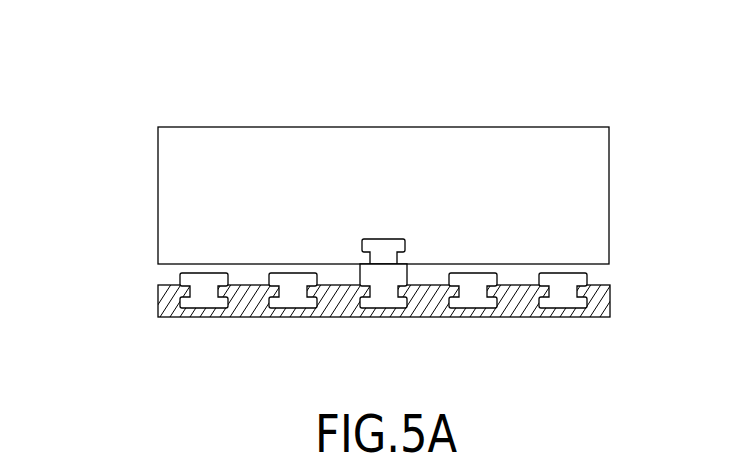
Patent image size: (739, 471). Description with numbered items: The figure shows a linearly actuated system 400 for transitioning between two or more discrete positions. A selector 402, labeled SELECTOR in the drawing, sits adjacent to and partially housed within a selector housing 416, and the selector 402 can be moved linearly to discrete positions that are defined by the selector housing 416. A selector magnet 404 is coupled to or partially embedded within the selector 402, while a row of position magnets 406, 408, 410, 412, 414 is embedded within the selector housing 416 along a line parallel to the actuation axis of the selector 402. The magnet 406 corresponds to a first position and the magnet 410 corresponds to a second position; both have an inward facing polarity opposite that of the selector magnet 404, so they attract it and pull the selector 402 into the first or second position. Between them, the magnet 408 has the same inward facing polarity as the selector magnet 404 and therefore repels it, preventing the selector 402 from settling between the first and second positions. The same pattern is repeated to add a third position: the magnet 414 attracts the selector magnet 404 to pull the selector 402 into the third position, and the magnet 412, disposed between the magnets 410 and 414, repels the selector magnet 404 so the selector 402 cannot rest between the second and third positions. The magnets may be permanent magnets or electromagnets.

The linearly actuated system 400 is at (145, 70).
The selector 402 is at (158, 147).
The selector magnet 404 is at (388, 250).
The magnet corresponding to a first position 406 is at (204, 296).
The magnet disposed between magnets 406 and 410 408 is at (293, 296).
The magnet corresponding to a second position 410 is at (384, 296).
The magnet disposed between magnets 410 and 414 412 is at (473, 298).
The magnet corresponding to a third position 414 is at (563, 298).
The selector housing 416 is at (158, 298).